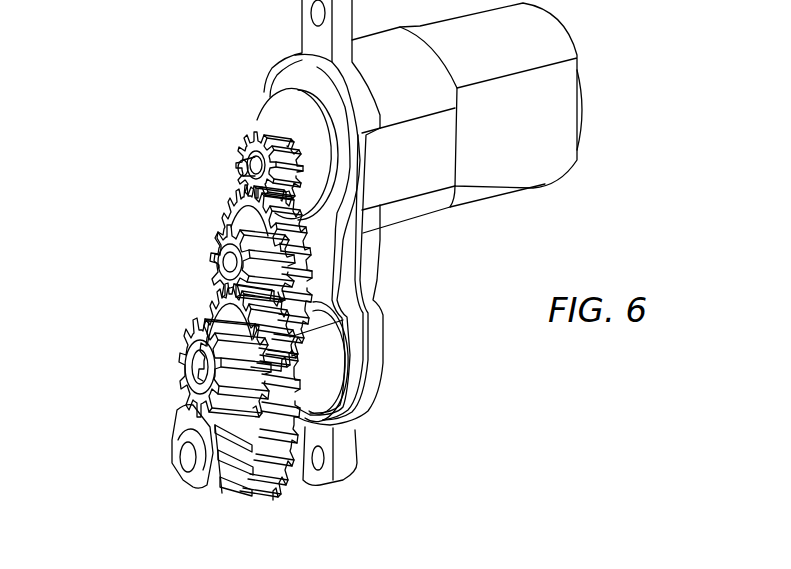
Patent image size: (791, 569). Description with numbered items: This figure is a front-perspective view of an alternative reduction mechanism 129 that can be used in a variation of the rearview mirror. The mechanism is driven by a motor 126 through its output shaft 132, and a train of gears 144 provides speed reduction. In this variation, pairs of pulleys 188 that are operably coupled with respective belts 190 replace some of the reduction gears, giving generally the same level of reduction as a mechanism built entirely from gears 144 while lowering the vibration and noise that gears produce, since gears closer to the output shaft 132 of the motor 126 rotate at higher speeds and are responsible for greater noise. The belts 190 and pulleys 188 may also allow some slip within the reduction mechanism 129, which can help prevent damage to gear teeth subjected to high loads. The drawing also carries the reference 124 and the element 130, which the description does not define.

The gear train 124 is at (128, 310).
The motor 126 is at (553, 143).
The reduction mechanism 129 is at (397, 353).
The bearing plate 130 is at (205, 490).
The output shaft 132 is at (236, 167).
The gears 144 is at (242, 142).
The pulleys 188 is at (273, 102).
The belts 190 is at (347, 187).